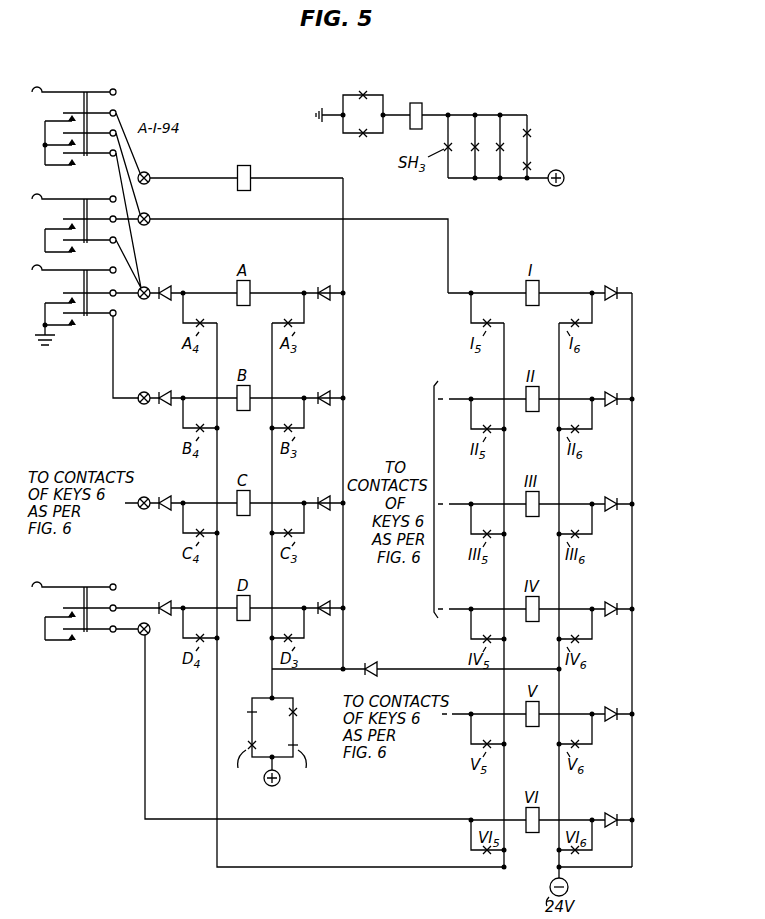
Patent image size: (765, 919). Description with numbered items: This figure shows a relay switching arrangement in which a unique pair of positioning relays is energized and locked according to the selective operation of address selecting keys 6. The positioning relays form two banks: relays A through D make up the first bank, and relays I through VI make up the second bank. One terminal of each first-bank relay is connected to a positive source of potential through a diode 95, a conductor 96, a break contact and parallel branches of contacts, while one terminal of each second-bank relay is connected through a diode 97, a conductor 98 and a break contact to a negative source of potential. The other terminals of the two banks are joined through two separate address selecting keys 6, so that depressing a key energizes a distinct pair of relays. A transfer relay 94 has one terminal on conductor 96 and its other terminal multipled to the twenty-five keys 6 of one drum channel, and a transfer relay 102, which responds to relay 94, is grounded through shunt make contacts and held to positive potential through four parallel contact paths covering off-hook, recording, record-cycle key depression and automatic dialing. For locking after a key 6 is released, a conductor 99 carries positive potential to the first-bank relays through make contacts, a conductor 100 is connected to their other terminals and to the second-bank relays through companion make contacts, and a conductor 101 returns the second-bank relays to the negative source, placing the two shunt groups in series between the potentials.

The address selecting key 6 is at (57, 87).
The transfer relay 94 is at (245, 166).
The diode 95 is at (324, 284).
The conductor 96 is at (345, 348).
The diode 97 is at (613, 286).
The conductor 98 is at (631, 432).
The conductor 99 is at (272, 553).
The conductor 100 is at (247, 732).
The conductor 101 is at (561, 361).
The transfer relay 102 is at (416, 103).